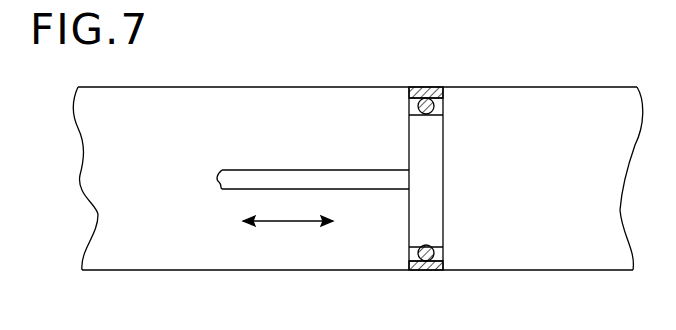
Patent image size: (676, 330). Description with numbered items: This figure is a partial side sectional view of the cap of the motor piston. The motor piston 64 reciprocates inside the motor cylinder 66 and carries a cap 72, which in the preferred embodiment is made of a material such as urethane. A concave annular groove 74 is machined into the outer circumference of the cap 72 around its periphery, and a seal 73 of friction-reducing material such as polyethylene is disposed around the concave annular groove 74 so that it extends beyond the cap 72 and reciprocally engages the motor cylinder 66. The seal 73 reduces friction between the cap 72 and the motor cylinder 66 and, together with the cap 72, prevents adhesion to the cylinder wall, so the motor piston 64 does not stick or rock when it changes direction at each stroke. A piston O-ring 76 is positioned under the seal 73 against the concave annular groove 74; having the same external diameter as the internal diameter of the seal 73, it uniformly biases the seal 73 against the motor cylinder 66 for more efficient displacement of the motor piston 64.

The motor cylinder 66 is at (533, 108).
The motor piston 64 is at (318, 172).
The cap 72 is at (443, 178).
The seal 73 is at (418, 95).
The concave annular groove 74 is at (409, 255).
The piston O-ring 76 is at (443, 249).